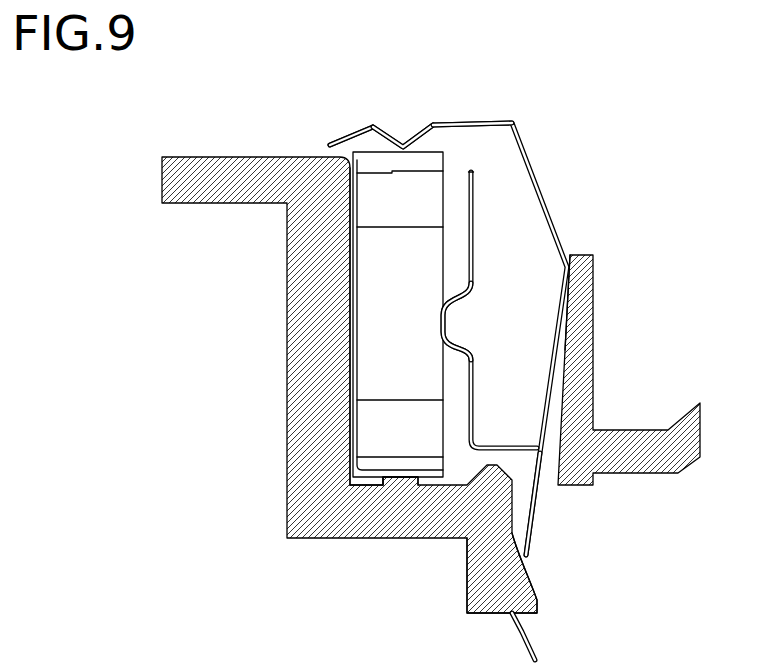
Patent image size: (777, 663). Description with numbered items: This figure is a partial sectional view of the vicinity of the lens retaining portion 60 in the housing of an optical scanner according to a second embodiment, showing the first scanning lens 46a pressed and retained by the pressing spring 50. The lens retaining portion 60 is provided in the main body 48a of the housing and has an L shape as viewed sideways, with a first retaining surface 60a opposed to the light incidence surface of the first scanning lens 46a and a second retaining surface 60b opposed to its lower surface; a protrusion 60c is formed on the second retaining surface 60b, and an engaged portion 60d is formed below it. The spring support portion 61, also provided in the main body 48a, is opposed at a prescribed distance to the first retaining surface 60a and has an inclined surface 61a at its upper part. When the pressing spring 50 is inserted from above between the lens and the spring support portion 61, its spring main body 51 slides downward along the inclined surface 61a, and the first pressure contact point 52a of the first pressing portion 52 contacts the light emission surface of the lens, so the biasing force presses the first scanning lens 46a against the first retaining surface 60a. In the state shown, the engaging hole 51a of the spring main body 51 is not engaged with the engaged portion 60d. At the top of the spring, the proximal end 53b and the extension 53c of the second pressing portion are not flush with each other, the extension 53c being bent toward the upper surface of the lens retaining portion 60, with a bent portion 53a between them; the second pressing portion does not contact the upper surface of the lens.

The first scanning lens 46a is at (388, 337).
The main body 48a is at (267, 513).
The pressing spring 50 is at (552, 132).
The spring main body 51 is at (557, 228).
The engaging hole 51a is at (525, 553).
The first pressing portion 52 is at (472, 197).
The first pressure contact point 52a is at (447, 318).
The V-shaped bent portion 53a is at (404, 143).
The proximal end 53b is at (468, 123).
The extension 53c is at (350, 138).
The lens retaining portion 60 is at (320, 425).
The first retaining surface 60a is at (347, 263).
The second retaining surface 60b is at (363, 488).
The protrusion 60c is at (403, 480).
The engaged portion 60d is at (533, 600).
The spring support portion 61 is at (583, 362).
The inclined surface 61a is at (563, 315).